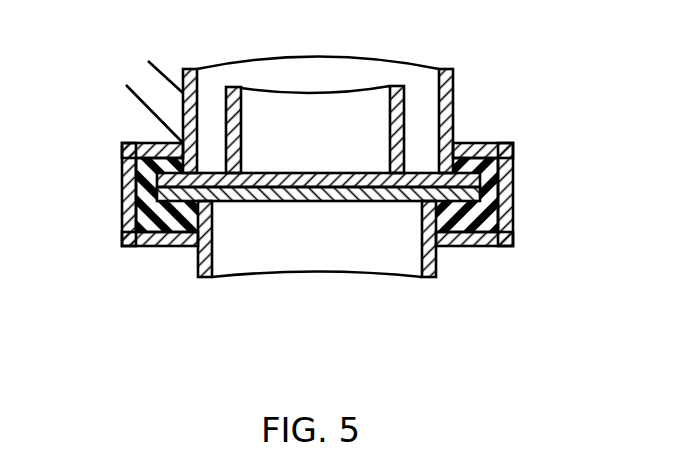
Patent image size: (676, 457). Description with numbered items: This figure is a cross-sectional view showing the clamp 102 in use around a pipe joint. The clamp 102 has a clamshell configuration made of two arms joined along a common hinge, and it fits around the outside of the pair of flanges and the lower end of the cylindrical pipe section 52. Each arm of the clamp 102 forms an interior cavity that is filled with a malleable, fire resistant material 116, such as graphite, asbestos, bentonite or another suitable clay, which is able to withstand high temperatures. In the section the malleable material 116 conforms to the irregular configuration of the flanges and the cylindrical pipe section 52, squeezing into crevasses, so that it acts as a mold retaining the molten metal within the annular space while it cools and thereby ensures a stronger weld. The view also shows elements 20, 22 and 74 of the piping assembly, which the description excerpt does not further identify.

The pipe 20 is at (438, 265).
The conduit 22 is at (320, 120).
The cylindrical pipe section 52 is at (452, 100).
The tube 74 is at (148, 112).
The clamp 102 is at (511, 198).
The malleable, fire resistant material 116 is at (477, 247).